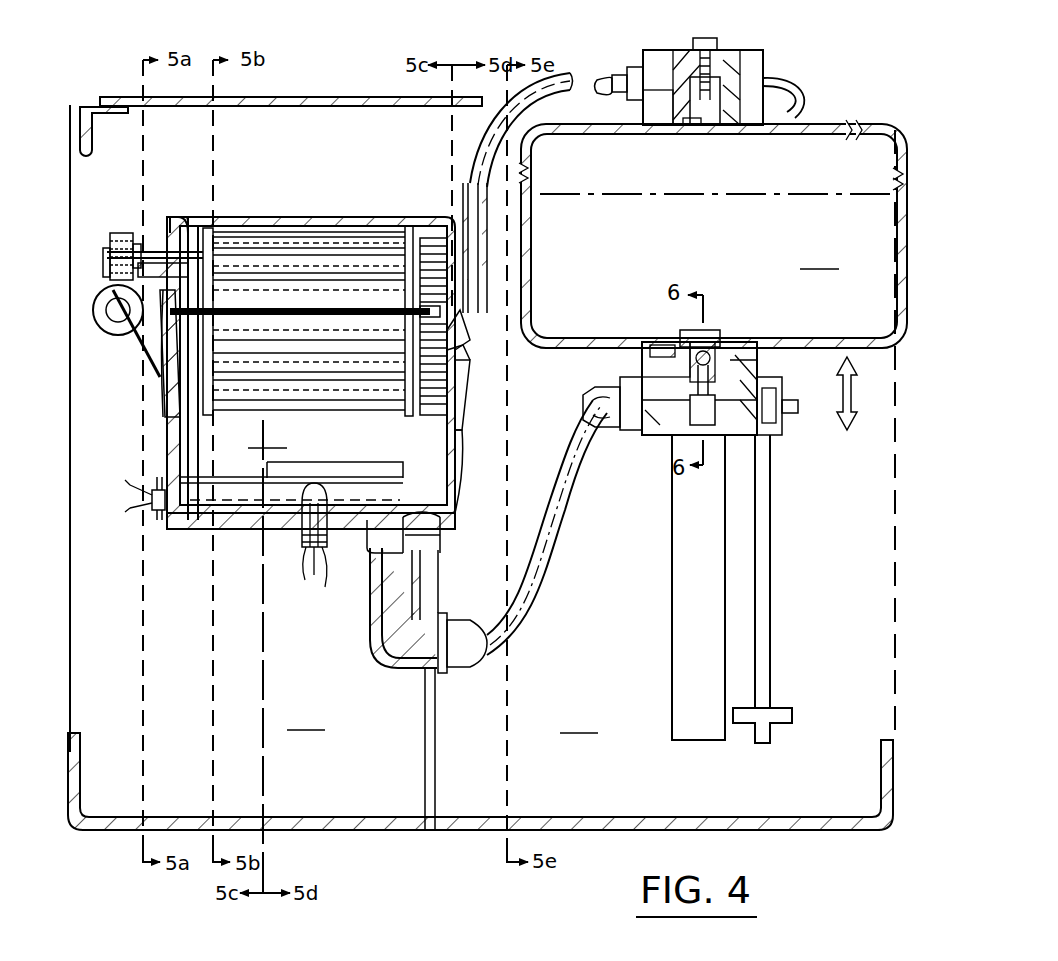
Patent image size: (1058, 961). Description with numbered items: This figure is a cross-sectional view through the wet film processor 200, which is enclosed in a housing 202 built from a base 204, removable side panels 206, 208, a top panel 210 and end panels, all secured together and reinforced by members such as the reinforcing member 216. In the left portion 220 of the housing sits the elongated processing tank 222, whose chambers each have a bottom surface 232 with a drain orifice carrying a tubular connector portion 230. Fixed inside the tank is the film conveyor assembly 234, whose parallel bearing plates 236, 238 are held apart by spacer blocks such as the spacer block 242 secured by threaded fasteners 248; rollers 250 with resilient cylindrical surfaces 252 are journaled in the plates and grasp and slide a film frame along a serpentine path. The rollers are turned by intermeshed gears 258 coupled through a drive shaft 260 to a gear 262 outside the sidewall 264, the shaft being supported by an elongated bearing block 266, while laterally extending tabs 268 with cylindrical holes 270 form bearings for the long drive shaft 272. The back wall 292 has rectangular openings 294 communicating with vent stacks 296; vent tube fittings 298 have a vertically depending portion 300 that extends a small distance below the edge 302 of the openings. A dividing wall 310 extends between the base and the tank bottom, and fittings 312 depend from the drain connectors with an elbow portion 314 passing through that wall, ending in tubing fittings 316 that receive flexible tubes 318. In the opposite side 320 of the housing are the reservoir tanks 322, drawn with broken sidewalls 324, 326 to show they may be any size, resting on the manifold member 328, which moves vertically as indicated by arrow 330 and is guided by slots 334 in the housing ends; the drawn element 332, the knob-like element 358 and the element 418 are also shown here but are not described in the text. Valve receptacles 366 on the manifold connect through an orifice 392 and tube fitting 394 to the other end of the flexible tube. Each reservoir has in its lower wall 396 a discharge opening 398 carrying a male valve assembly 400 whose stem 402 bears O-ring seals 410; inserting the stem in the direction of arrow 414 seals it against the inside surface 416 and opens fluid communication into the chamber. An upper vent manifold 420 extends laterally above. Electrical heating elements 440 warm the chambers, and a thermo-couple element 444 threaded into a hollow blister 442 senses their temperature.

The wet film processor 200 is at (312, 95).
The housing 202 is at (718, 823).
The base 204 is at (525, 825).
The removable side panel 206 is at (72, 690).
The removable side panel 208 is at (895, 592).
The top panel 210 is at (357, 102).
The reinforcing member 216 is at (110, 114).
The left portion of housing 220 is at (307, 718).
The processing tank 222 is at (165, 440).
The tubular connector portion 230 is at (417, 542).
The bottom surface 232 is at (437, 517).
The film conveyor assembly 234 is at (403, 390).
The bearing plate 236 is at (193, 390).
The bearing plate 238 is at (403, 377).
The spacer block 242 is at (268, 435).
The threaded fastener 248 is at (453, 427).
The roller 250 is at (290, 243).
The cylindrical surface 252 is at (340, 310).
The intermeshed gear 258 is at (440, 250).
The drive shaft 260 is at (140, 225).
The gear 262 is at (110, 240).
The sidewall 264 is at (160, 377).
The bearing block 266 is at (152, 265).
The laterally extending tab 268 is at (115, 335).
The cylindrical hole 270 is at (123, 310).
The drive shaft 272 is at (117, 287).
The back wall 292 is at (450, 472).
The rectangular opening 294 is at (110, 293).
The vent stack 296 is at (487, 255).
The vent tube fitting 298 is at (480, 277).
The vertically depending portion 300 is at (487, 207).
The edge of opening 302 is at (620, 90).
The dividing wall 310 is at (427, 703).
The fitting 312 is at (397, 670).
The elbow portion 314 is at (400, 633).
The tubing fitting 316 is at (487, 648).
The flexible tube 318 is at (535, 547).
The opposite side of housing 320 is at (580, 721).
The reservoir tank 322 is at (713, 234).
The broken sidewall 324 is at (653, 128).
The broken sidewall 326 is at (527, 290).
The manifold member 328 is at (752, 447).
The arrow 330 is at (871, 393).
The float 332 is at (680, 605).
The vertically extending slot 334 is at (765, 598).
The adjustment knob 358 is at (797, 407).
The valve receptacle 366 is at (642, 380).
The orifice 392 is at (677, 407).
The tube fitting 394 is at (632, 407).
The lower wall 396 is at (593, 333).
The discharge opening 398 is at (718, 323).
The male valve assembly 400 is at (740, 57).
The stem 402 is at (760, 70).
The O-ring seal 410 is at (707, 37).
The arrow 414 is at (723, 40).
The inside surface 416 is at (660, 80).
The hose connector 418 is at (637, 72).
The upper vent manifold 420 is at (685, 128).
The electrical heating element 440 is at (203, 497).
The hollow blister 442 is at (303, 520).
The thermo-couple element 444 is at (367, 507).